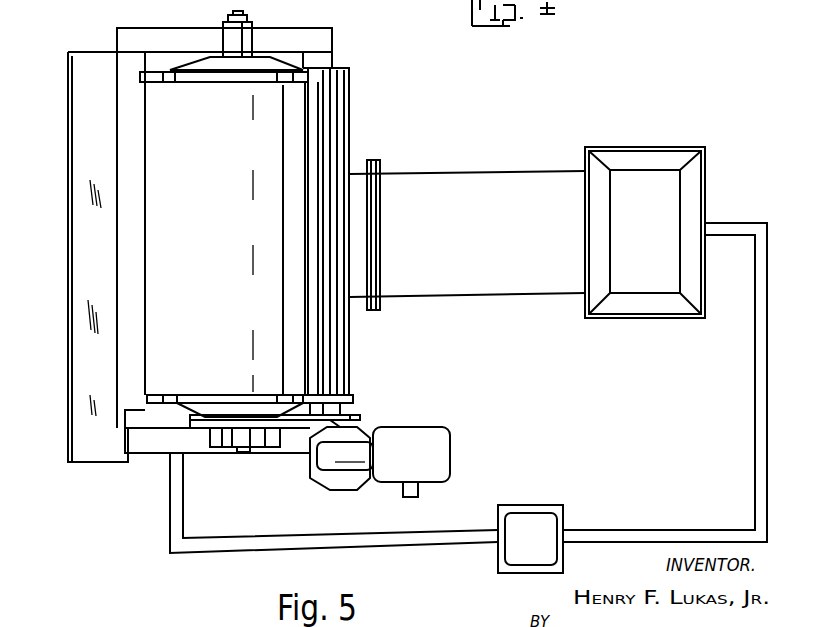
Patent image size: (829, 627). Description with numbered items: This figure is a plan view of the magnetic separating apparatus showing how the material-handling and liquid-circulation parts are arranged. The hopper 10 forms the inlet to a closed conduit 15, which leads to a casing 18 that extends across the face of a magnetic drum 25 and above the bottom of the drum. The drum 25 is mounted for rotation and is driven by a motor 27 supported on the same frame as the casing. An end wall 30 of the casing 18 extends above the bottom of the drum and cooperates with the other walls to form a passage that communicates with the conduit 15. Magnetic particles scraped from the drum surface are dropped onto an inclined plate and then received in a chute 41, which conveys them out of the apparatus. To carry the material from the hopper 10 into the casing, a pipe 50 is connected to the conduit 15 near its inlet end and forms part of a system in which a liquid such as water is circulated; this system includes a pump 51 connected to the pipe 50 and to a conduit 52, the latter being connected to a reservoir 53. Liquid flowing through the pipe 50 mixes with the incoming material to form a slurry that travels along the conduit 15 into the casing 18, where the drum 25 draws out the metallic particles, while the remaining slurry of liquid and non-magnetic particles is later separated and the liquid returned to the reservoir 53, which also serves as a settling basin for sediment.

The hopper 10 is at (682, 147).
The closed conduit 15 is at (452, 182).
The casing 18 is at (352, 352).
The magnetic drum 25 is at (330, 95).
The motor 27 is at (410, 432).
The end wall 30 is at (145, 70).
The chute 41 is at (70, 225).
The pipe 50 is at (755, 415).
The pump 51 is at (542, 505).
The conduit 52 is at (328, 538).
The reservoir 53 is at (148, 455).